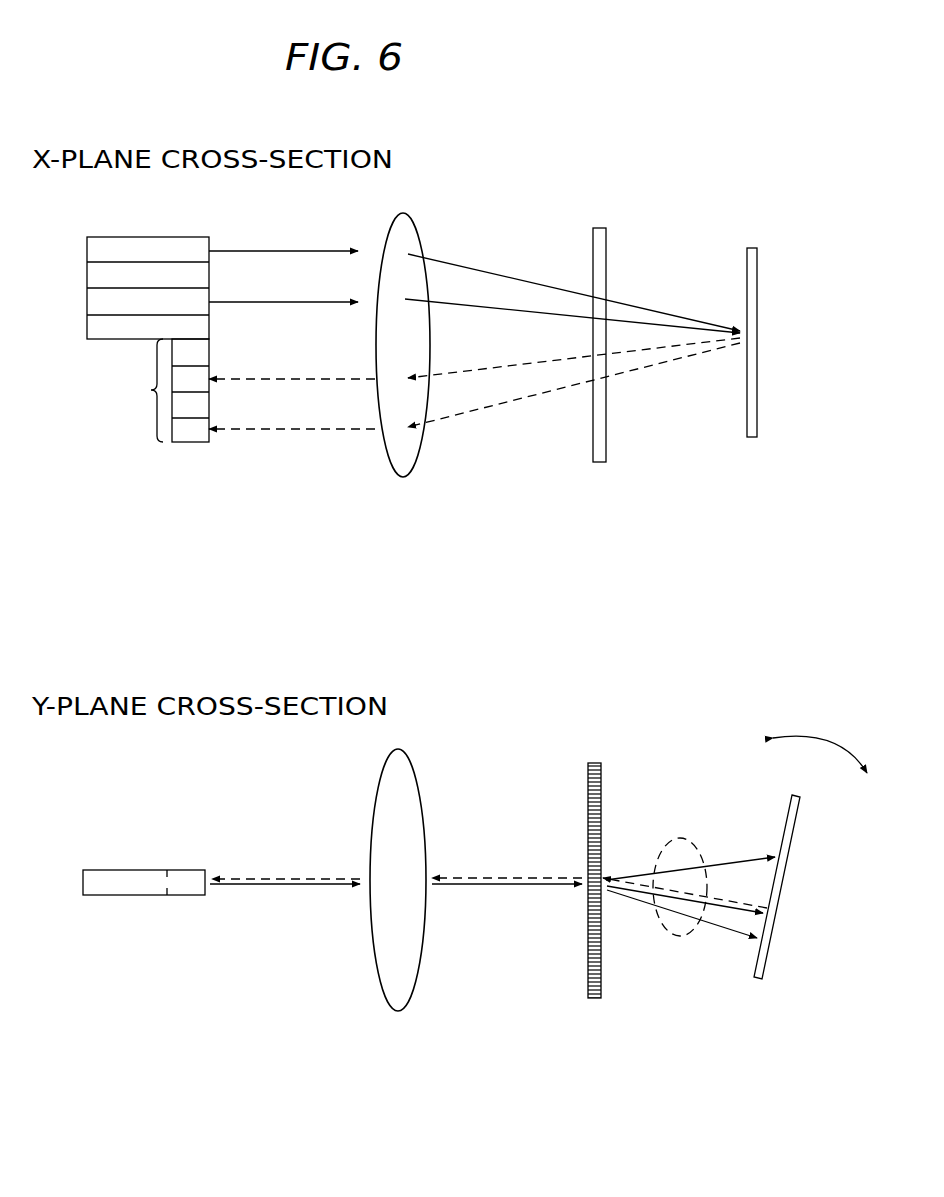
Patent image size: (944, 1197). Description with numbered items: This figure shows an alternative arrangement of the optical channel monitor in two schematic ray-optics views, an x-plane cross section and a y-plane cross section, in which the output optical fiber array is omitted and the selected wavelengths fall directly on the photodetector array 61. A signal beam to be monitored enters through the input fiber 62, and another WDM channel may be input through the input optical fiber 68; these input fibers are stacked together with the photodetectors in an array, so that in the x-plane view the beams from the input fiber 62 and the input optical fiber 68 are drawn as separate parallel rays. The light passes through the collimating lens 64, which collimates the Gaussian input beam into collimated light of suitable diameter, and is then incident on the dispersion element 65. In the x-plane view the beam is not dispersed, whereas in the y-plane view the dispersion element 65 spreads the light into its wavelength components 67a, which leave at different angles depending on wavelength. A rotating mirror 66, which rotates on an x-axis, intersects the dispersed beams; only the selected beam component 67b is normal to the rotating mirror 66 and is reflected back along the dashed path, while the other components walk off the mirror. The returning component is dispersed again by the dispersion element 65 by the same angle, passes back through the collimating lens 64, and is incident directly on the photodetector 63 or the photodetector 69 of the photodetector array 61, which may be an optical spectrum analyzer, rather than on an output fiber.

The photodetector array 61 is at (137, 390).
The input fiber 62 is at (145, 235).
The photodetector 63 is at (192, 442).
The collimating lens 64 is at (415, 227).
The dispersion element 65 is at (598, 227).
The rotating mirror 66 is at (750, 248).
The wavelength components 67a is at (663, 850).
The selected beam component 67b is at (738, 910).
The input optical fiber 68 is at (209, 295).
The photodetector 69 is at (209, 368).